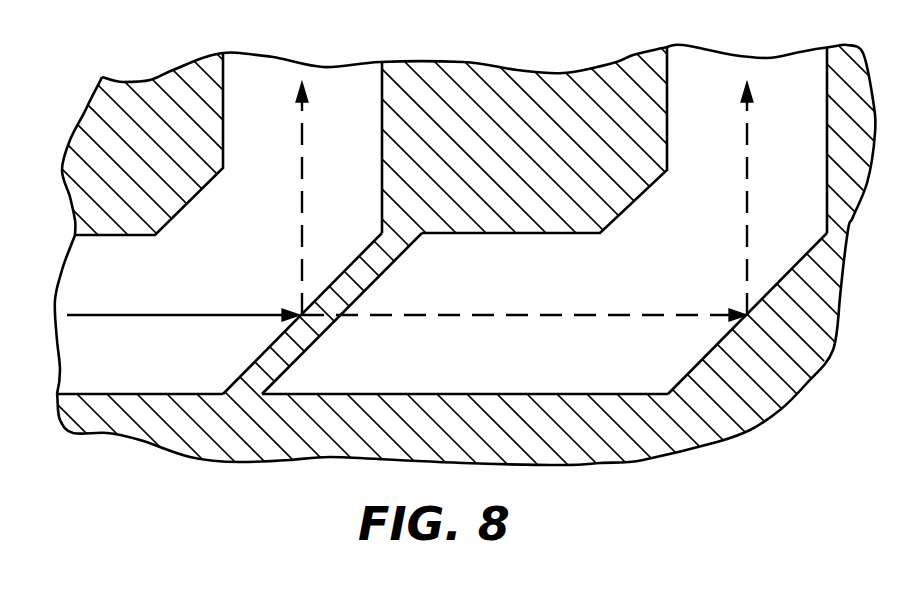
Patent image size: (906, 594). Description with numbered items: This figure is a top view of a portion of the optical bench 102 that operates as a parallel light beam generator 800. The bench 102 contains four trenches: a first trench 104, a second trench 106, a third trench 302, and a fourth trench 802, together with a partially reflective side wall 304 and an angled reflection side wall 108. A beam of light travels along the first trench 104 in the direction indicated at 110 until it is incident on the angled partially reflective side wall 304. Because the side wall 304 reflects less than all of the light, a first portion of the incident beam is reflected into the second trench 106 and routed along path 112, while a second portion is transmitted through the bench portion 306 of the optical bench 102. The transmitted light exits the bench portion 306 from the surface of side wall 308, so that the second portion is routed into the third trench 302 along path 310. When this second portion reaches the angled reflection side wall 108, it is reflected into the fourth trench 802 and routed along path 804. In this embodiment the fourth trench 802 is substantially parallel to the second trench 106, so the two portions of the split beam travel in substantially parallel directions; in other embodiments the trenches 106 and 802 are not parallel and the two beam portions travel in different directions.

The optical bench 102 is at (137, 413).
The first trench 104 is at (98, 339).
The second trench 106 is at (341, 80).
The angled reflection side wall 108 is at (703, 357).
The fluid flow direction 110 is at (158, 315).
The path 112 is at (302, 198).
The third trench 302 is at (570, 375).
The partially reflective side wall 304 is at (258, 359).
The bench portion 306 is at (248, 398).
The side wall 308 is at (390, 270).
The path 310 is at (552, 315).
The parallel light beam generator 800 is at (808, 469).
The fourth trench 802 is at (781, 72).
The path 804 is at (747, 197).